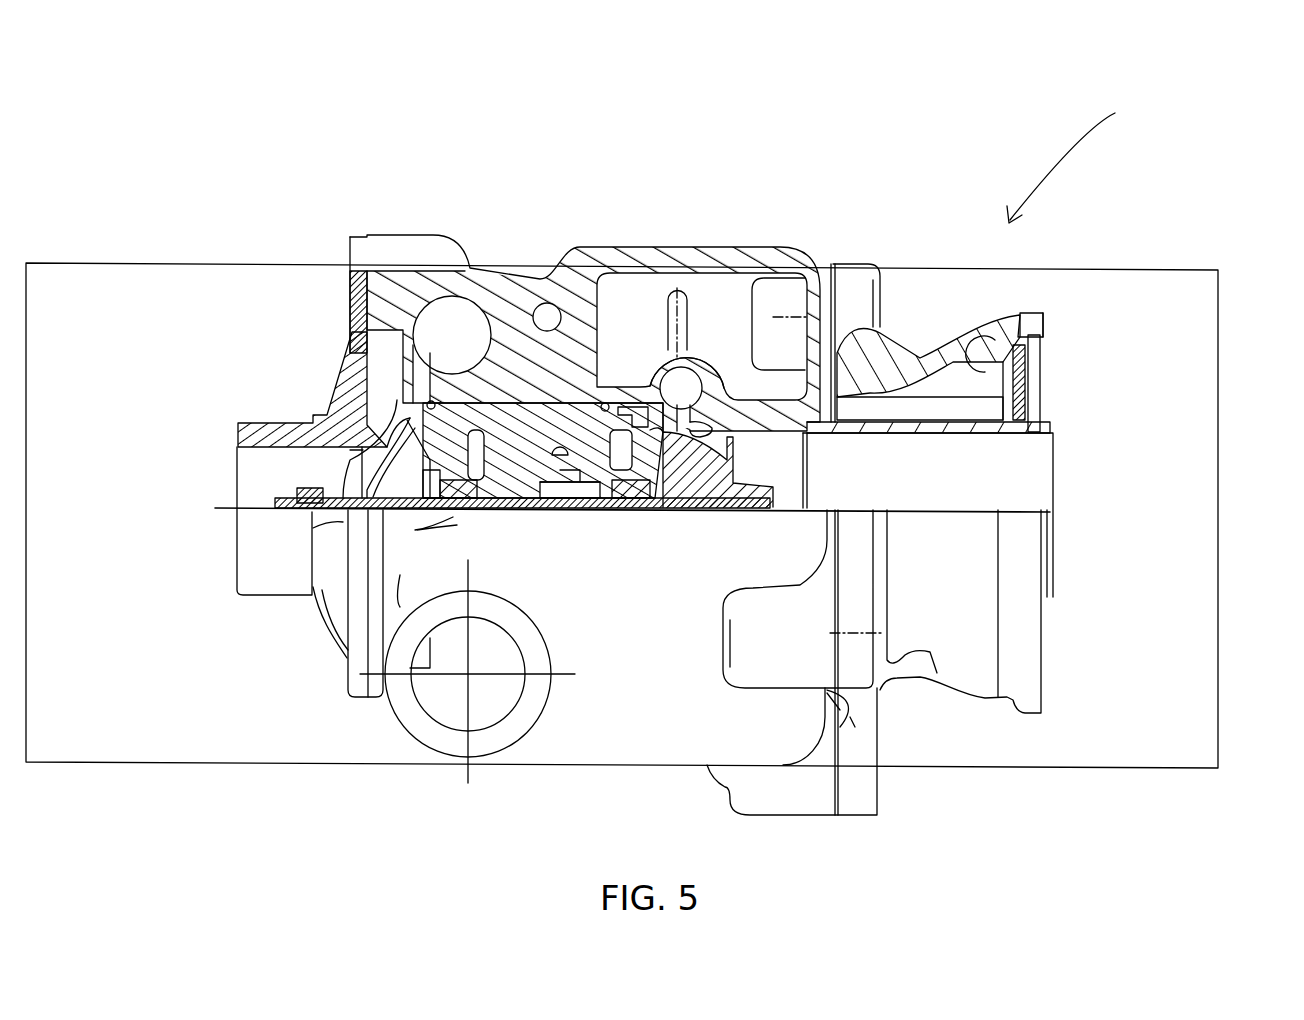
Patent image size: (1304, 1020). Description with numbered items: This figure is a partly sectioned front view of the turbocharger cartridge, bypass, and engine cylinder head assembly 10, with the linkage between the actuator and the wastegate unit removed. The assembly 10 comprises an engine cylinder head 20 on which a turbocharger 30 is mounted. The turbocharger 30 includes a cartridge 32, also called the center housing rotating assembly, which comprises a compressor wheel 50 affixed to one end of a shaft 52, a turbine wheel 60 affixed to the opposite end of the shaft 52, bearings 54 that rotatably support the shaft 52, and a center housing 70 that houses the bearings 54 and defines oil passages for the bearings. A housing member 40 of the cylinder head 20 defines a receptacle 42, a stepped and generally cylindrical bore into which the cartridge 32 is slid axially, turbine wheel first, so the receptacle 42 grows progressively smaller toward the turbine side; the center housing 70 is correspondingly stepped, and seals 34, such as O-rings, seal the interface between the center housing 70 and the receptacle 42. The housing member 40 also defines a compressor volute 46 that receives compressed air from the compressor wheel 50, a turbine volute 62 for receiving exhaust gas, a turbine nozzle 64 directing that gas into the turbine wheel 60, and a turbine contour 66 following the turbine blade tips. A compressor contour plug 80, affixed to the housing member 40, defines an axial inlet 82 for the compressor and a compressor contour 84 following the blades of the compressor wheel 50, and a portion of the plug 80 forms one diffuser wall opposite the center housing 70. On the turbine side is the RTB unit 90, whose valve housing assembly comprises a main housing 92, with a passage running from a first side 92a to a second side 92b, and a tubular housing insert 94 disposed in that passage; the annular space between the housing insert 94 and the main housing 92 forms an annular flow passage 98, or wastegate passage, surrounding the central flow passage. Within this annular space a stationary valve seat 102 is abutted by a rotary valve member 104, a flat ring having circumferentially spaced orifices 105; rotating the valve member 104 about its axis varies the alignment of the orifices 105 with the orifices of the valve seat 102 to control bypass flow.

The turbocharger cartridge, bypass, and engine cylinder head assembly 10 is at (1076, 161).
The engine cylinder head 20 is at (1205, 343).
The turbocharger 30 is at (652, 510).
The cartridge 32 is at (673, 522).
The seals 34 is at (431, 401).
The housing member 40 is at (688, 260).
The receptacle 42 is at (572, 400).
The compressor volute 46 is at (455, 308).
The compressor wheel 50 is at (355, 472).
The shaft 52 is at (310, 510).
The bearings 54 is at (585, 495).
The turbine wheel 60 is at (700, 490).
The turbine volute 62 is at (680, 372).
The turbine nozzle 64 is at (682, 425).
The turbine contour 66 is at (705, 437).
The center housing 70 is at (493, 455).
The compressor contour plug 80 is at (300, 432).
The axial inlet 82 is at (247, 450).
The compressor contour 84 is at (380, 453).
The RTB unit 90 is at (920, 348).
The main housing 92 is at (995, 345).
The first side 92a is at (826, 355).
The second side 92b is at (1045, 335).
The housing insert 94 is at (985, 430).
The annular flow passage 98 is at (908, 408).
The stationary valve seat 102 is at (1035, 418).
The rotary valve member 104 is at (1015, 417).
The orifices 105 is at (995, 343).